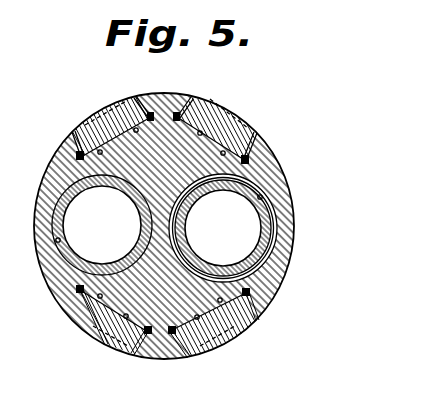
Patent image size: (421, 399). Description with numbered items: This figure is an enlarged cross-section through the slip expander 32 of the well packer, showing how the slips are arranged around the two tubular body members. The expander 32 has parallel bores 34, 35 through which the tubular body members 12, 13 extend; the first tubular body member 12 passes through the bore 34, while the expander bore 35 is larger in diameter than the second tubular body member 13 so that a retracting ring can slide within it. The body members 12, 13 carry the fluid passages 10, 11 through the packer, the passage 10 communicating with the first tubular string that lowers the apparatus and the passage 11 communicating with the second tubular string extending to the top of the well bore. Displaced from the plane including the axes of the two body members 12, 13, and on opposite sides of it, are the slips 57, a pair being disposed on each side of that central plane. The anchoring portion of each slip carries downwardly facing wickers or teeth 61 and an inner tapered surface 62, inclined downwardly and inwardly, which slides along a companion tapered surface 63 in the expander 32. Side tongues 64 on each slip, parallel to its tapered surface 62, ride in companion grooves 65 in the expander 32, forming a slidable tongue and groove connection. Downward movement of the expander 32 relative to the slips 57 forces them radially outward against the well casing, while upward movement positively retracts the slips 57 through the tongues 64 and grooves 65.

The fluid passage 10 is at (102, 225).
The fluid passage 11 is at (223, 228).
The tubular body member 12 is at (55, 210).
The second tubular body member 13 is at (255, 257).
The slip expander 32 is at (290, 230).
The bore 34 is at (56, 241).
The expander bore 35 is at (262, 197).
The slip 57 is at (90, 122).
The wickers 61 is at (123, 98).
The tapered surface 62 is at (73, 134).
The tapered surface 63 is at (198, 133).
The side tongue 64 is at (178, 116).
The groove 65 is at (78, 157).